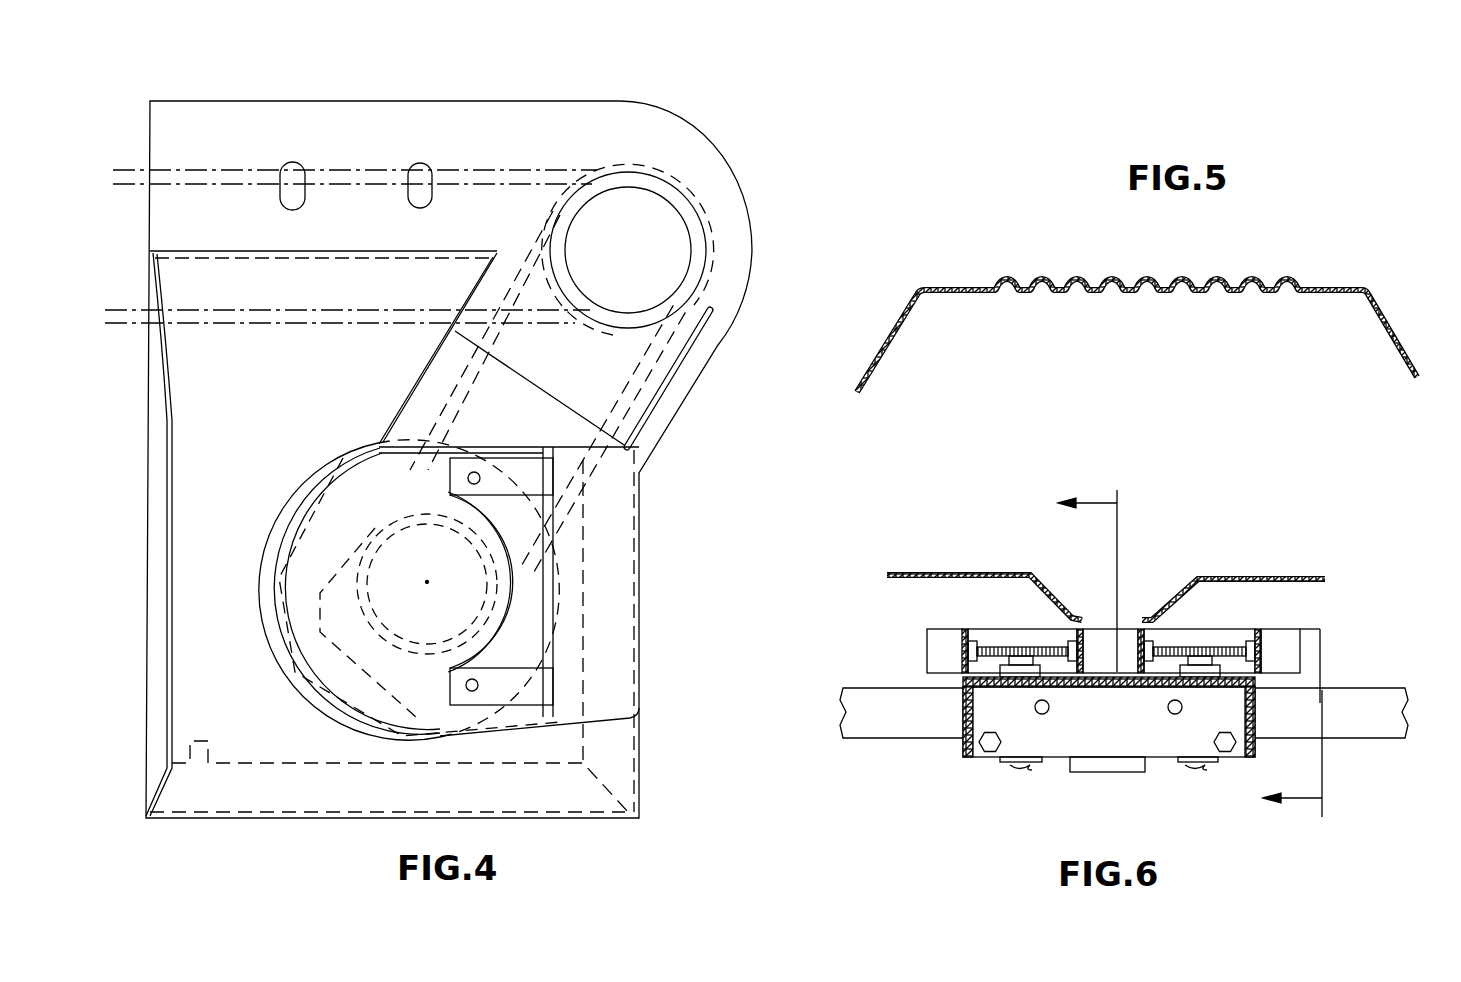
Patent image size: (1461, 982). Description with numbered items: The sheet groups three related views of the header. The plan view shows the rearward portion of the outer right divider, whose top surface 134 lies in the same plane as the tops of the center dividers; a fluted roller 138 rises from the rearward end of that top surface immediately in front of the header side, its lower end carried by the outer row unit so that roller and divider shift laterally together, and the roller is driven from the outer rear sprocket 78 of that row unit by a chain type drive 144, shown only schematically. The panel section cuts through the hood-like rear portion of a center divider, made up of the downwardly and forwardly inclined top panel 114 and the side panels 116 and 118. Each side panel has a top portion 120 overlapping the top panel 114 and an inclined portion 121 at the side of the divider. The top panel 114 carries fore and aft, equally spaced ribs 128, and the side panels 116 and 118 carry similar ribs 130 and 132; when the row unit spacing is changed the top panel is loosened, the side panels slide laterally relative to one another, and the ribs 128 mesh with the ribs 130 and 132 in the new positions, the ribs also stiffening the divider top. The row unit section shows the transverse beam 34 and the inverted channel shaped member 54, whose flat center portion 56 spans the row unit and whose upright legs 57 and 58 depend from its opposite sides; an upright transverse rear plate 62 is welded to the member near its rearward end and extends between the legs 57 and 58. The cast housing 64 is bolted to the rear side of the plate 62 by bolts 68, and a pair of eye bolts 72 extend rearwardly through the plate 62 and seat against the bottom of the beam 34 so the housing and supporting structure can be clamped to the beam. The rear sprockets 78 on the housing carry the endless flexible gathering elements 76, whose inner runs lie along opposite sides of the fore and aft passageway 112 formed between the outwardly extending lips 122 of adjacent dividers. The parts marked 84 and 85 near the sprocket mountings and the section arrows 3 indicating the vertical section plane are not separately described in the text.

In FIG. 4, the rear sprockets 78 is at (645, 195).
In FIG. 6, the rear sprockets 78 is at (1023, 647).
In FIG. 4, the chain type drive 144 is at (673, 310).
In FIG. 4, the top surface 134 is at (313, 357).
In FIG. 4, the fluted roller 138 is at (340, 478).
In FIG. 5, the side panel 116 is at (975, 288).
In FIG. 5, the ribs 128 is at (1073, 286).
In FIG. 5, the top panel 114 is at (1140, 250).
In FIG. 5, the inclined portion 121 is at (910, 301).
In FIG. 5, the ribs 130 is at (1073, 297).
In FIG. 5, the top portion 120 is at (1222, 298).
In FIG. 5, the ribs 132 is at (1284, 298).
In FIG. 5, the side panel 118 is at (1355, 289).
In FIG. 6, the section line 3- 3 is at (1200, 655).
In FIG. 6, the guide plate 122 is at (1070, 612).
In FIG. 6, the passageways 112 is at (1130, 612).
In FIG. 6, the gathering elements 76 is at (985, 629).
In FIG. 6, the end wall 85 is at (1085, 629).
In FIG. 6, the base plate 84 is at (1258, 657).
In FIG. 6, the upright leg 57 is at (973, 695).
In FIG. 6, the bolts 68 is at (1050, 706).
In FIG. 6, the center portion 56 is at (1123, 687).
In FIG. 6, the upright leg 58 is at (1262, 730).
In FIG. 6, the rear plate 62 is at (1082, 740).
In FIG. 6, the channel shaped member 54 is at (1255, 748).
In FIG. 6, the eye bolts 72 is at (988, 753).
In FIG. 6, the cast housing 64 is at (1125, 772).
In FIG. 6, the transverse beam 34 is at (1365, 738).